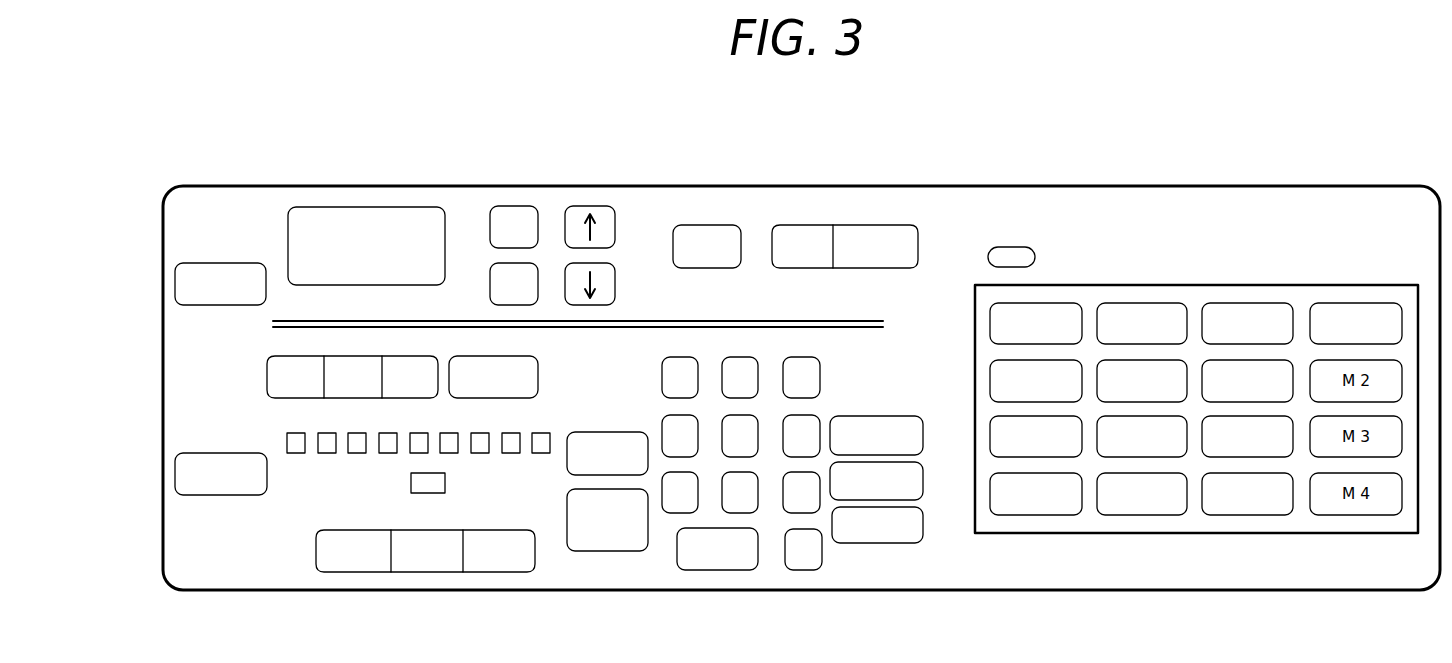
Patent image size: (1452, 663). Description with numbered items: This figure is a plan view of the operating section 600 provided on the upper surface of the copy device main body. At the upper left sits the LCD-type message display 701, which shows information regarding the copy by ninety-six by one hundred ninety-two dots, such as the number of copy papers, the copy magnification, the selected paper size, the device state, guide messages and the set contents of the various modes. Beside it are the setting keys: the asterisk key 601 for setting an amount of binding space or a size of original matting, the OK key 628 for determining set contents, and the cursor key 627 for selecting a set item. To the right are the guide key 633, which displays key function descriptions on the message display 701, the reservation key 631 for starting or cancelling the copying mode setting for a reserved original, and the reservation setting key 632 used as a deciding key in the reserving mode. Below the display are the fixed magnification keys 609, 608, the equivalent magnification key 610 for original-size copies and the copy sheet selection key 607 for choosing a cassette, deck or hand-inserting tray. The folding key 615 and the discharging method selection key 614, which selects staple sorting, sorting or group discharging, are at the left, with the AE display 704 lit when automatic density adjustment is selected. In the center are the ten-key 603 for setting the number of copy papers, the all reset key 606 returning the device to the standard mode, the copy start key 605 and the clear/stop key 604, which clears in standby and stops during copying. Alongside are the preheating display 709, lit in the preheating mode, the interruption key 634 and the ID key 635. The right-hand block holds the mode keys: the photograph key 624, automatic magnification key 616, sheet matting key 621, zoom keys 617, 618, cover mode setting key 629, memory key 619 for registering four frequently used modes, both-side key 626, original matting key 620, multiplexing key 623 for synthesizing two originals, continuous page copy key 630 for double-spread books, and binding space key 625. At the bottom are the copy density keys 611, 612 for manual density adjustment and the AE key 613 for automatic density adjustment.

The operating section 600 is at (1341, 131).
The message display 701 is at (368, 207).
The asterisk key 601 is at (490, 283).
The OK key 628 is at (510, 206).
The cursor key 627 is at (622, 206).
The guide key 633 is at (707, 225).
The reservation key 631 is at (800, 225).
The reservation setting key 632 is at (872, 225).
The folding key 615 is at (220, 263).
The fixed magnification key 609 is at (300, 356).
The equivalent magnification key 610 is at (364, 356).
The fixed magnification key 608 is at (430, 356).
The copy sheet selection key 607 is at (527, 356).
The ten-key 603 is at (655, 352).
The discharging method selection key 614 is at (222, 453).
The AE display 704 is at (445, 484).
The all reset key 606 is at (606, 432).
The copy start key 605 is at (607, 551).
The clear/stop key 604 is at (718, 570).
The preheating display 709 is at (923, 437).
The interruption key 634 is at (923, 482).
The ID key 635 is at (923, 526).
The photograph key 624 is at (990, 375).
The automatic magnification key 616 is at (1045, 303).
The sheet matting key 621 is at (1097, 375).
The zoom key 617 is at (1138, 303).
The cover mode setting key 629 is at (1205, 360).
The zoom key 618 is at (1240, 303).
The memory key 619 is at (1348, 303).
The both-side key 626 is at (1046, 515).
The original matting key 620 is at (1097, 440).
The multiplexing key 623 is at (1150, 515).
The continuous page copy key 630 is at (1245, 515).
The binding space key 625 is at (1293, 440).
The copy density key 611 is at (355, 572).
The AE key 613 is at (425, 572).
The copy density key 612 is at (500, 572).